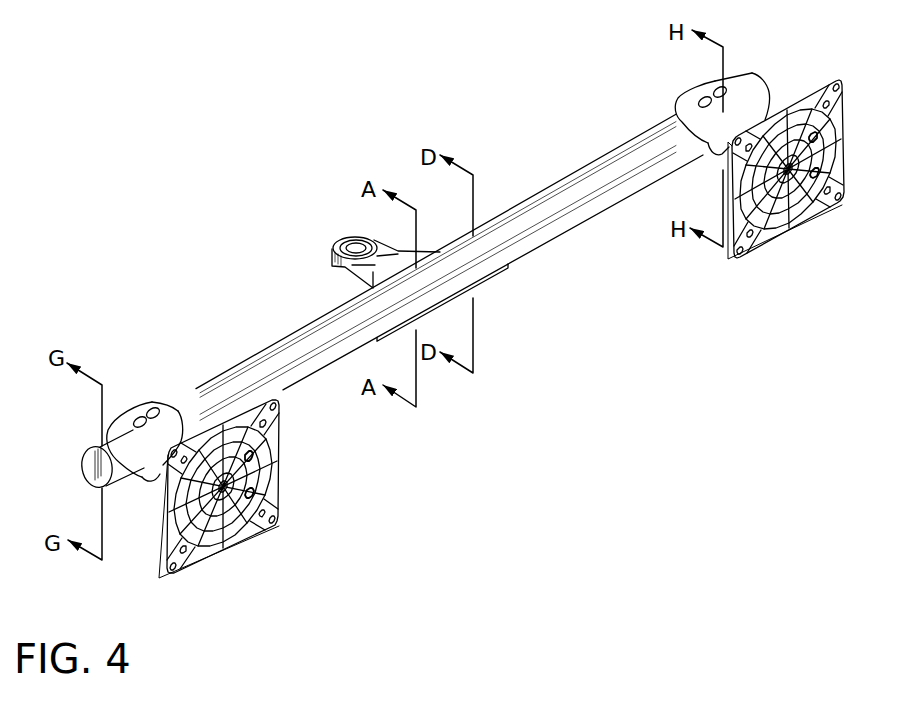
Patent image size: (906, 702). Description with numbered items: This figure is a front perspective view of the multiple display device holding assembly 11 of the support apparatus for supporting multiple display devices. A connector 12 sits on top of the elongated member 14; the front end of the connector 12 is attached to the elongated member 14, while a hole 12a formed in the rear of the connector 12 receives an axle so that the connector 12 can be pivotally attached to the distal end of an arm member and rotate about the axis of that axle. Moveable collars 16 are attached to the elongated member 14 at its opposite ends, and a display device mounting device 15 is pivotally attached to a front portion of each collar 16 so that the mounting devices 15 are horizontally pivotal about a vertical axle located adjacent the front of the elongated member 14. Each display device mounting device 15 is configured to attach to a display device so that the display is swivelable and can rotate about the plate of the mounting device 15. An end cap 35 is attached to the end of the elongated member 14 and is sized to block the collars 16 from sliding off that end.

The multiple display device holding assembly 11 is at (120, 370).
The connector 12 is at (350, 274).
The hole 12a is at (355, 243).
The elongated member 14 is at (546, 221).
The display device mounting device 15 is at (230, 550).
The collar 16 is at (168, 417).
The end cap 35 is at (88, 474).